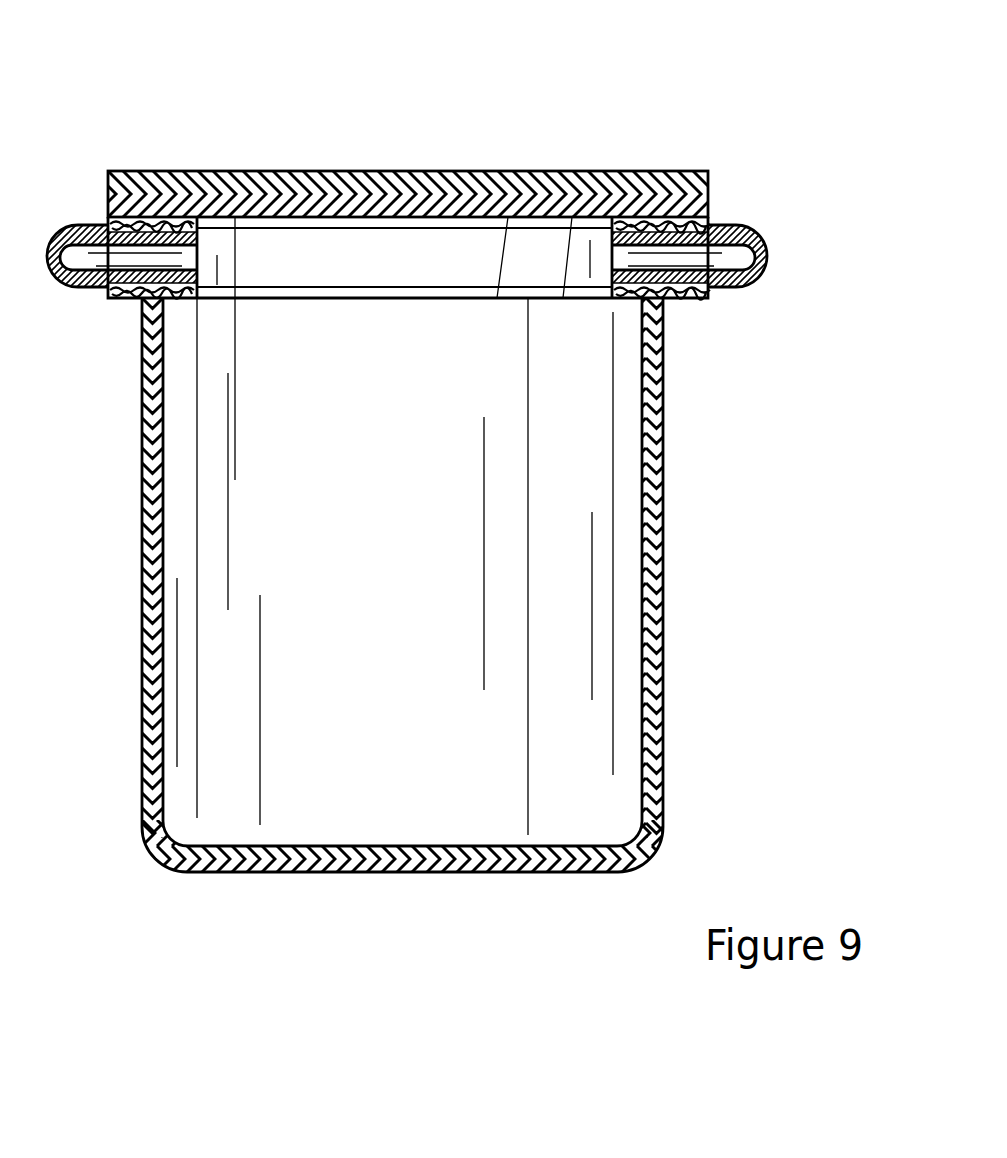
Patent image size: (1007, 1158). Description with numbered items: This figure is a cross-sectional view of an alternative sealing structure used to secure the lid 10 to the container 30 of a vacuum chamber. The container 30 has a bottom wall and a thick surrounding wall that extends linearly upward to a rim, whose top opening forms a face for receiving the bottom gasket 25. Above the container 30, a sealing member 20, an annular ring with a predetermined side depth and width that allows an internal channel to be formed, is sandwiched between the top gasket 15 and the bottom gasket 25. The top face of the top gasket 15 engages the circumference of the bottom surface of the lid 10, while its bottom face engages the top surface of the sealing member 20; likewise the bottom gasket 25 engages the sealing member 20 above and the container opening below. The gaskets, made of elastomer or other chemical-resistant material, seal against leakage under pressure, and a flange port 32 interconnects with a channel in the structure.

The lid 10 is at (513, 168).
The top gasket 15 is at (723, 223).
The sealing member 20 is at (383, 263).
The bottom gasket 25 is at (682, 297).
The container 30 is at (673, 588).
The flange port 32 is at (75, 285).